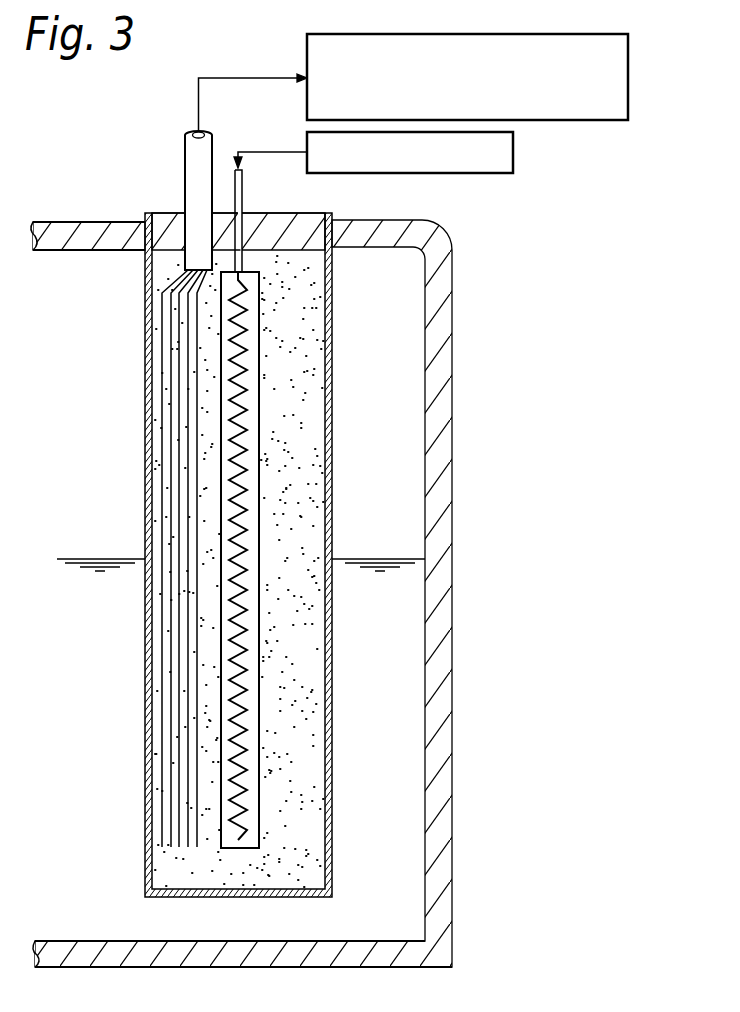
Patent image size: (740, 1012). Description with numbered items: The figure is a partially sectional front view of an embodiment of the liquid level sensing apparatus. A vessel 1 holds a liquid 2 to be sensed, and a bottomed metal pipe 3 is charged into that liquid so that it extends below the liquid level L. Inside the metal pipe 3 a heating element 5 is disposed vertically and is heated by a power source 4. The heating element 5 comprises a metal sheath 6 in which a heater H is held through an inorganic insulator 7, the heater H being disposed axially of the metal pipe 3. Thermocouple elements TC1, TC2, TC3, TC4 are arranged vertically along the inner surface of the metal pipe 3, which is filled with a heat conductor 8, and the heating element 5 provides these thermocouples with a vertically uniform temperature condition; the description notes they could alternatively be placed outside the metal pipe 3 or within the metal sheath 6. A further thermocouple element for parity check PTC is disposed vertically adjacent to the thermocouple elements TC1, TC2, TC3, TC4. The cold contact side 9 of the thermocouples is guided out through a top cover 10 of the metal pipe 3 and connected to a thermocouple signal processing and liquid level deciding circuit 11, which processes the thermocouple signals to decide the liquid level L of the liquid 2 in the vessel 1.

The vessel 1 is at (452, 283).
The liquid 2 is at (388, 575).
The bottomed metal pipe 3 is at (333, 375).
The power source 4 is at (513, 156).
The heating element 5 is at (245, 320).
The metal sheath 6 is at (258, 433).
The inorganic insulator 7 is at (245, 485).
The heat conductor 8 is at (298, 407).
The cold contact side 9 is at (193, 184).
The top cover 10 is at (289, 213).
The thermocouple signal processing and liquid level deciding circuit 11 is at (540, 34).
The heater H is at (243, 350).
The liquid level L is at (90, 560).
The thermocouple element for parity check PTC is at (197, 625).
The thermocouple element TC1 is at (162, 825).
The thermocouple element TC2 is at (171, 785).
The thermocouple element TC3 is at (179, 732).
The thermocouple element TC4 is at (188, 685).